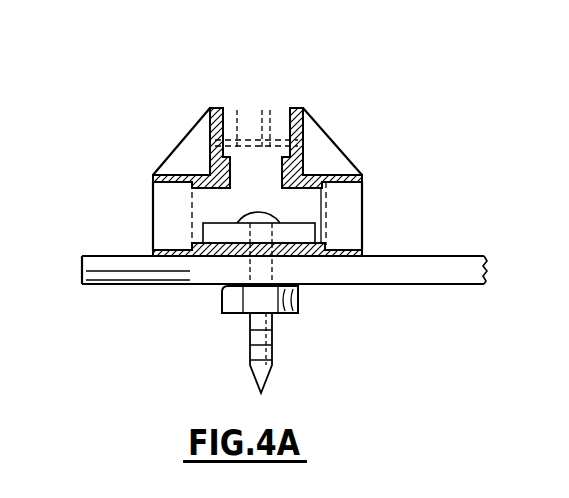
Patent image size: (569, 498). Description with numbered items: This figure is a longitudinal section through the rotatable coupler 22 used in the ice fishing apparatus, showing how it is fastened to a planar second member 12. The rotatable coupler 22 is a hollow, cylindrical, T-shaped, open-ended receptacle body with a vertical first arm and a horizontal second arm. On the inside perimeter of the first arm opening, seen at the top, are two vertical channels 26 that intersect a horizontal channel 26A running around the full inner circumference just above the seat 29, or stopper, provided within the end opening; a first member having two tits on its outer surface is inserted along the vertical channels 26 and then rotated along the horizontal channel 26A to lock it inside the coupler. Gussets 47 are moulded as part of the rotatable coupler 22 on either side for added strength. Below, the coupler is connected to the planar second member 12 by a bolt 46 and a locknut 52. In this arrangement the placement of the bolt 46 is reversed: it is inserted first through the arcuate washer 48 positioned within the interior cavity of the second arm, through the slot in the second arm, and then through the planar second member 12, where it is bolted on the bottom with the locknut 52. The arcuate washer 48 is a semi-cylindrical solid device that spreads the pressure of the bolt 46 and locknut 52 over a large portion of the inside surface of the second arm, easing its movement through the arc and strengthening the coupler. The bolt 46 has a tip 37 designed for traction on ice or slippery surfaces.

The planar second member 12 is at (422, 268).
The rotatable coupler 22 is at (362, 175).
The vertical channels 26 is at (268, 113).
The horizontal channel 26A is at (237, 150).
The seat 29 is at (295, 107).
The tip 37 is at (268, 380).
The bolt 46 is at (262, 212).
The gussets 47 is at (190, 152).
The arcuate washer 48 is at (213, 232).
The locknut 52 is at (240, 287).